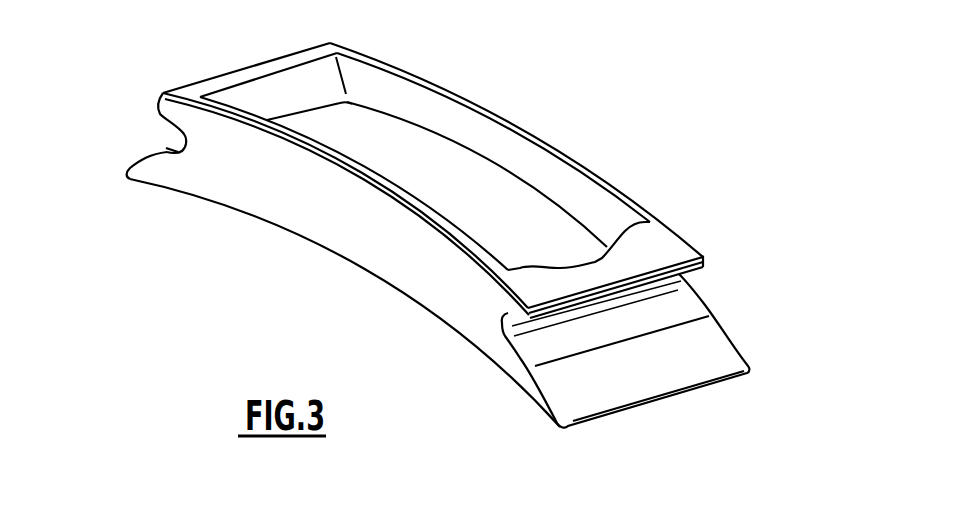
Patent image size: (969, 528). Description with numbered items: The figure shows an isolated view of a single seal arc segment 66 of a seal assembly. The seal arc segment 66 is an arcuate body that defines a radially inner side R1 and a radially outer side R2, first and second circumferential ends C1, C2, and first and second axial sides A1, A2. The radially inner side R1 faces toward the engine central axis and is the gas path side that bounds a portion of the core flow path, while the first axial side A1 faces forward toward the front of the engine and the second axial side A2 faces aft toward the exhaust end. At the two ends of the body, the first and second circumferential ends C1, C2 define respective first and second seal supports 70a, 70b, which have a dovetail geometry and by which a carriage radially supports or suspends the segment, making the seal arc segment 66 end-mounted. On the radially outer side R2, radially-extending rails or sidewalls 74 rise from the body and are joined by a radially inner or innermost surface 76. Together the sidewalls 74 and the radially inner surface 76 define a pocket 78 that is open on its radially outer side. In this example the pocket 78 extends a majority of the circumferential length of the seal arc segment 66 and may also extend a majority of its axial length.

The seal arc segment 66 is at (229, 228).
The first seal support 70a is at (540, 343).
The second seal support 70b is at (174, 137).
The sidewalls 74 is at (247, 92).
The radially inner surface 76 is at (377, 117).
The pocket 78 is at (446, 156).
The first axial side A1 is at (328, 230).
The second axial side A2 is at (534, 140).
The radially inner side R1 is at (456, 332).
The radially outer side R2 is at (634, 188).
The first circumferential end C1 is at (739, 322).
The second circumferential end C2 is at (120, 146).